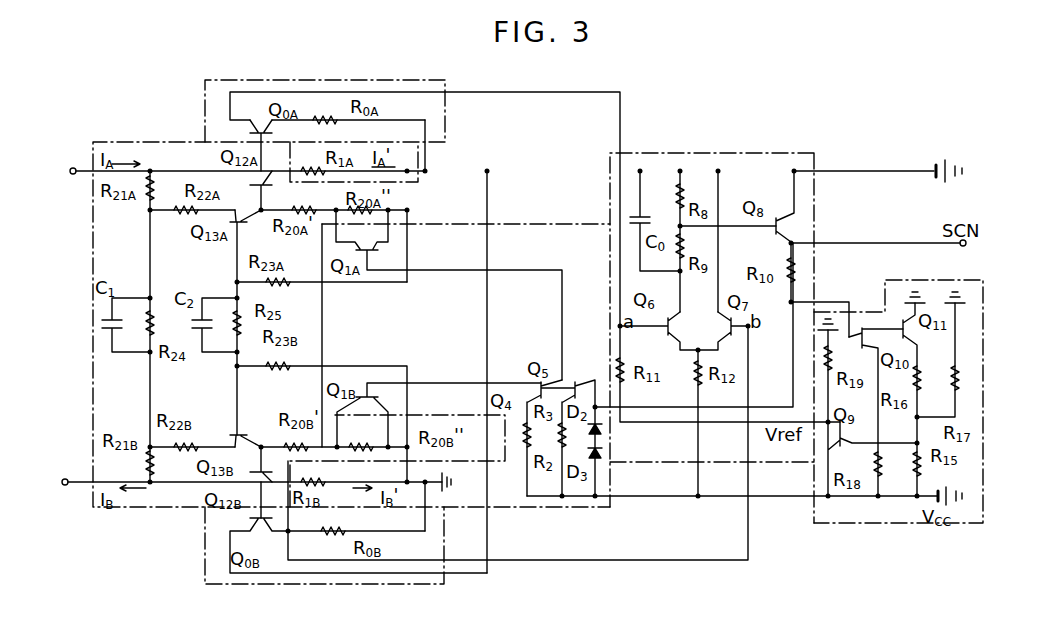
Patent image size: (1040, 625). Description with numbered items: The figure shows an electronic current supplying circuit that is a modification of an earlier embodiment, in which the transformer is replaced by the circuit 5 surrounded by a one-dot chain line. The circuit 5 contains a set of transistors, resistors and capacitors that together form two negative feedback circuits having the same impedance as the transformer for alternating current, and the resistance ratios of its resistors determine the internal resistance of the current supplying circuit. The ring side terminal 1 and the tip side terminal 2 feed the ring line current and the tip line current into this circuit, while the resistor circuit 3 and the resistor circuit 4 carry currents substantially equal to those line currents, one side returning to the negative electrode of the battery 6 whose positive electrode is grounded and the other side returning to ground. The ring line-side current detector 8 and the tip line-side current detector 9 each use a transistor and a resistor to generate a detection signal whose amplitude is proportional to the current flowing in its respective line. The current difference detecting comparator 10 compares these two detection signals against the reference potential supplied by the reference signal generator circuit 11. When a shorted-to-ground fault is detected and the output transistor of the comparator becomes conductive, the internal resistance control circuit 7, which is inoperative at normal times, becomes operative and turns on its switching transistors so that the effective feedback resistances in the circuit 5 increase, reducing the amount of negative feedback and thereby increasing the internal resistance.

The ring side terminal 1 is at (73, 168).
The tip side terminal 2 is at (65, 479).
The resistor circuit 3 is at (425, 163).
The resistor circuit 4 is at (495, 507).
The circuit 5 is at (93, 350).
The battery 6 is at (934, 178).
The internal resistance control circuit 7 is at (550, 224).
The ring line-side current detector 8 is at (205, 90).
The tip line-side current detector 9 is at (205, 566).
The current difference detecting comparator 10 is at (752, 154).
The reference signal generator circuit 11 is at (888, 523).